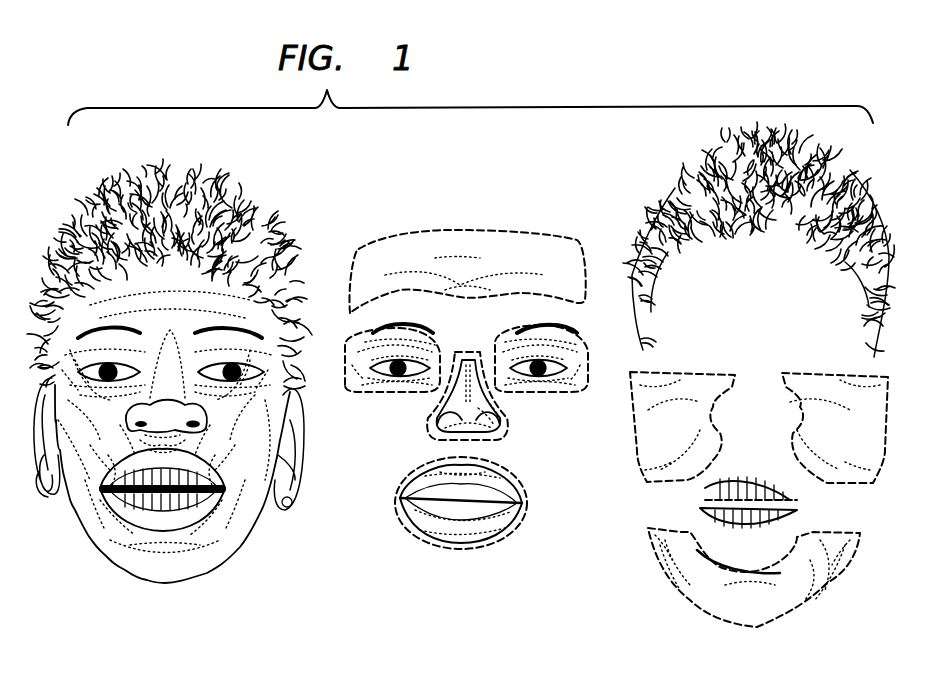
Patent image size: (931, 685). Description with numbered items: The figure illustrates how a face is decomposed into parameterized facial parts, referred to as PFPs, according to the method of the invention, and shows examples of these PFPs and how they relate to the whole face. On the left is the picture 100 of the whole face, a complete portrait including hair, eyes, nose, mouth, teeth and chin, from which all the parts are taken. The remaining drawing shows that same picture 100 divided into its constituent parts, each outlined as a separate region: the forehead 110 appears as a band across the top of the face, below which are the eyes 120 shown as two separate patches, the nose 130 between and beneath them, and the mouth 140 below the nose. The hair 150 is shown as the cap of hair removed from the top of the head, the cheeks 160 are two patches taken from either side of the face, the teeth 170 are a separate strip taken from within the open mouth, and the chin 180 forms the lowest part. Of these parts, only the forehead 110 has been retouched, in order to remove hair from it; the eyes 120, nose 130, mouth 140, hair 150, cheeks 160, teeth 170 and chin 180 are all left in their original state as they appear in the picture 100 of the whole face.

The picture of the whole face 100 is at (145, 568).
The forehead 110 is at (472, 240).
The eyes 120 is at (432, 337).
The nose 130 is at (427, 427).
The mouth 140 is at (420, 518).
The hair 150 is at (674, 181).
The cheeks 160 is at (847, 377).
The teeth 170 is at (740, 507).
The chin 180 is at (690, 590).